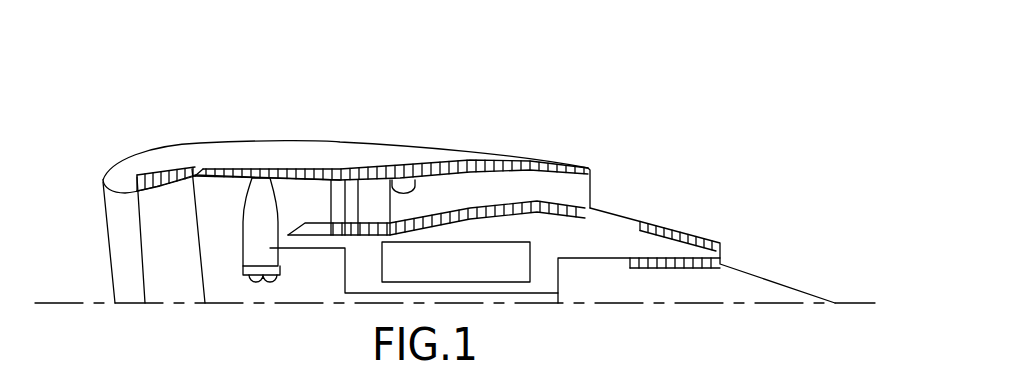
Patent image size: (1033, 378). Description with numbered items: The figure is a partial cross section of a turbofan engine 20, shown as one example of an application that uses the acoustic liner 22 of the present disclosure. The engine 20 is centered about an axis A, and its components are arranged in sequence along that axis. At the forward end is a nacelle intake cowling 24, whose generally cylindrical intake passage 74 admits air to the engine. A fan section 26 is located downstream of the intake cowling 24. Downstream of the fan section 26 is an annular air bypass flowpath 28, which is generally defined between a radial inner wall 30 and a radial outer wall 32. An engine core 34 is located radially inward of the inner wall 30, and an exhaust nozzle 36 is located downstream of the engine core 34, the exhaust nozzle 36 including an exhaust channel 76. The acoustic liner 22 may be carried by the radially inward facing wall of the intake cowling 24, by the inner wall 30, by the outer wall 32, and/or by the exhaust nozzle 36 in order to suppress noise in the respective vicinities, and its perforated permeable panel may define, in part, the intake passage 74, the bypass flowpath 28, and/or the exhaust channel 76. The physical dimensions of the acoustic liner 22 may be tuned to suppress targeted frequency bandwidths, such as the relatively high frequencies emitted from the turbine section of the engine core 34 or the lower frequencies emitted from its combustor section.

The turbofan engine 20 is at (702, 73).
The acoustic liner 22 is at (162, 200).
The nacelle intake cowling 24 is at (172, 150).
The fan section 26 is at (253, 230).
The annular air bypass flowpath 28 is at (523, 197).
The inner wall 30 is at (427, 224).
The outer wall 32 is at (412, 170).
The engine core 34 is at (470, 272).
The exhaust nozzle 36 is at (675, 207).
The intake passage 74 is at (123, 240).
The exhaust channel 76 is at (723, 245).
The axis A is at (843, 300).